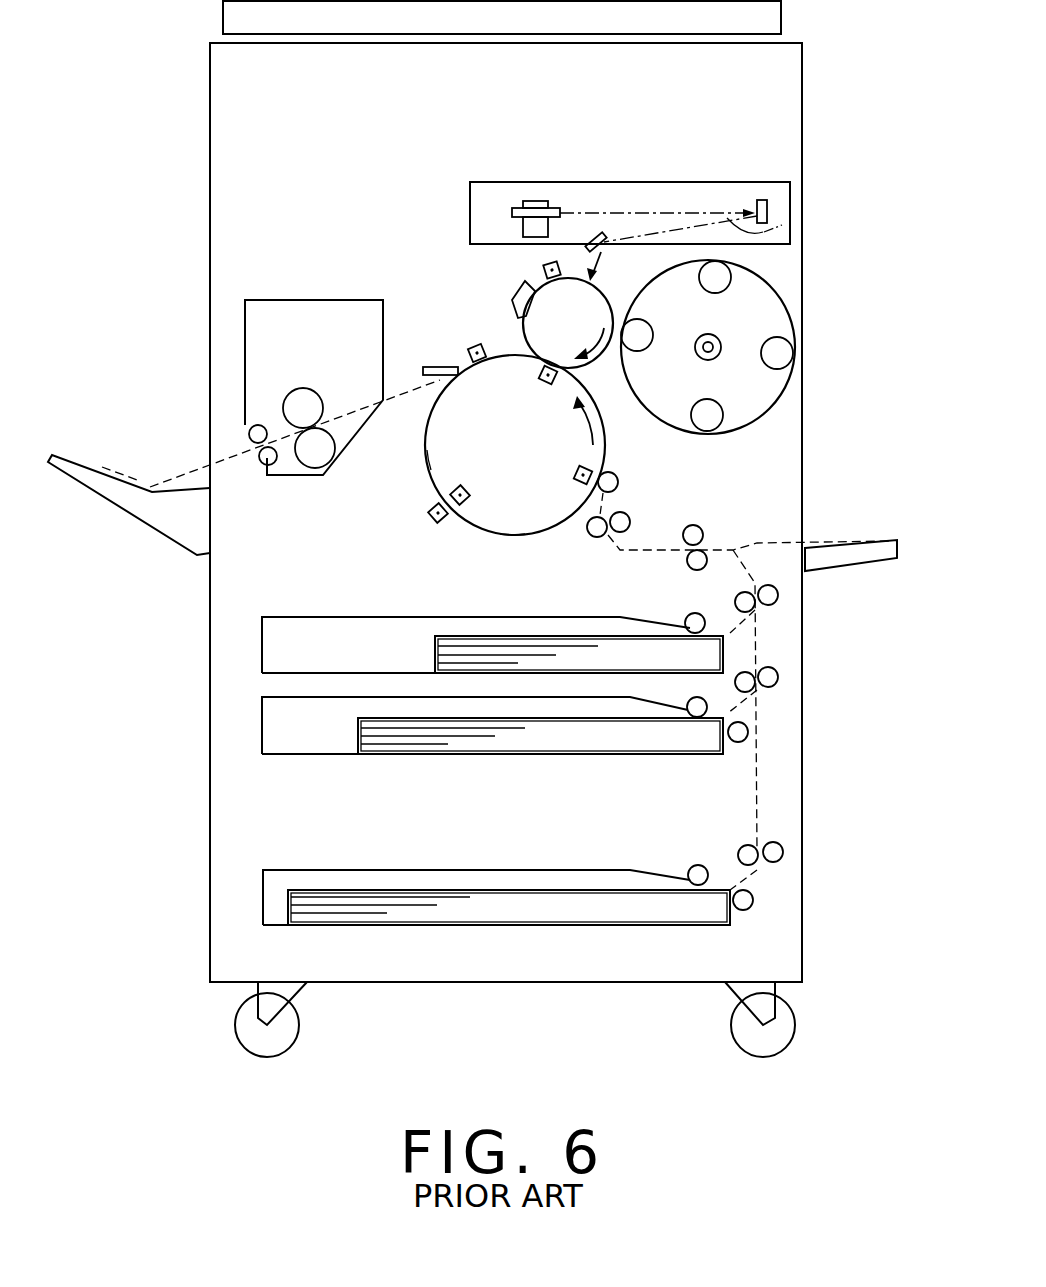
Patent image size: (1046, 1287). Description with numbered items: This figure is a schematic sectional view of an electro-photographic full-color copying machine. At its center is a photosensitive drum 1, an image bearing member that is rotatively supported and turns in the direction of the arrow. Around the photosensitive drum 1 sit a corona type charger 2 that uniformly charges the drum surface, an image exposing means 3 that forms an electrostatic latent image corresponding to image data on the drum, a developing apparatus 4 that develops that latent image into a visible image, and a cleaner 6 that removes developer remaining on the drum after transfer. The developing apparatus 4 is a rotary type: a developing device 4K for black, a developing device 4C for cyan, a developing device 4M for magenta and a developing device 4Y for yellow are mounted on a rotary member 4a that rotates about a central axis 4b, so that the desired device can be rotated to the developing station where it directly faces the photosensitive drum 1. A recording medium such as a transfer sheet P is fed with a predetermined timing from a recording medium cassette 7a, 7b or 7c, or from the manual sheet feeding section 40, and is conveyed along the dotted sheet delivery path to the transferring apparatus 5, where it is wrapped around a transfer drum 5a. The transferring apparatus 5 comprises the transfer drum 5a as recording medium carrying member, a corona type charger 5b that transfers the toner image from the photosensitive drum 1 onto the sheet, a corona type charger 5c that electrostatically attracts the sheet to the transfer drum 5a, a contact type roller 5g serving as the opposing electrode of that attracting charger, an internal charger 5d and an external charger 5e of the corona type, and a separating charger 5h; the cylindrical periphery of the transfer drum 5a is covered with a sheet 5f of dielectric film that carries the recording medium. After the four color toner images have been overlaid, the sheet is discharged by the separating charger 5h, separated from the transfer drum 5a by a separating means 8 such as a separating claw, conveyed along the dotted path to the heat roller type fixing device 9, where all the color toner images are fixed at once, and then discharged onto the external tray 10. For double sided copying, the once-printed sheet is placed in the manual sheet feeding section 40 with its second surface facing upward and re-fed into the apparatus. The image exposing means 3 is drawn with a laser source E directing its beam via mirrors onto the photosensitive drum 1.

The photosensitive drum 1 is at (600, 362).
The charger 2 is at (541, 268).
The image exposing means 3 is at (668, 182).
The developing apparatus 4 is at (743, 360).
The rotary member 4a is at (791, 312).
The central axis 4b is at (716, 352).
The developing device for yellow color 4Y is at (720, 278).
The developing device for magenta color 4M is at (778, 353).
The developing device for cyan color 4C is at (706, 414).
The developing device for black color 4K is at (639, 338).
The transferring apparatus 5 is at (426, 486).
The transfer drum 5a is at (427, 462).
The corona type charger 5b is at (545, 386).
The corona type charger 5c is at (573, 478).
The internal charger 5d is at (460, 488).
The external charger 5e is at (436, 522).
The sheet of dielectric film 5f is at (512, 537).
The roller 5g is at (618, 482).
The separating charger 5h is at (470, 350).
The cleaner 6 is at (512, 298).
The recording medium cassette 7a is at (262, 648).
The recording medium cassette 7b is at (262, 720).
The recording medium cassette 7c is at (263, 905).
The separating means 8 is at (425, 367).
The fixing device 9 is at (298, 300).
The external tray 10 is at (122, 520).
The manual sheet feeding section 40 is at (850, 566).
The laser light source E is at (773, 233).
The transfer sheet P is at (583, 647).